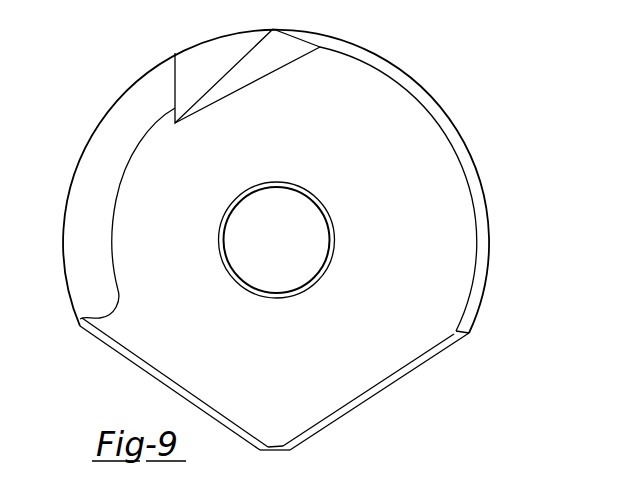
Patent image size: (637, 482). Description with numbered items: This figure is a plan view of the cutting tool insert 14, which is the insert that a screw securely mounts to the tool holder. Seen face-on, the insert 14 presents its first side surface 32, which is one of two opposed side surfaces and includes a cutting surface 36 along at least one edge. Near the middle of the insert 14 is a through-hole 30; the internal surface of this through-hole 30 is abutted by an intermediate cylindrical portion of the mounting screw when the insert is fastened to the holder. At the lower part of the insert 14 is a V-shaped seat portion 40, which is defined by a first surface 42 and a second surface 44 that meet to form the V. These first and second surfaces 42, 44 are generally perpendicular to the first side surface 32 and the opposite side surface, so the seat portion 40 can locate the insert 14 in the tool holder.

The cutting tool insert 14 is at (470, 126).
The through-hole 30 is at (308, 281).
The first side surface 32 is at (403, 126).
The cutting surface 36 is at (98, 151).
The V-shaped seat portion 40 is at (277, 418).
The first surface 42 is at (135, 366).
The second surface 44 is at (381, 389).